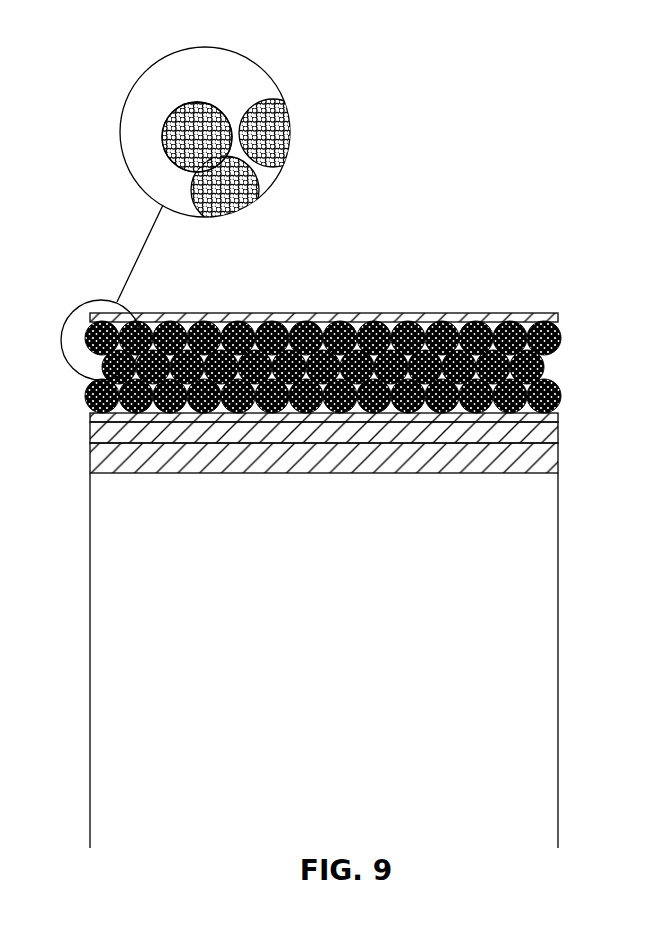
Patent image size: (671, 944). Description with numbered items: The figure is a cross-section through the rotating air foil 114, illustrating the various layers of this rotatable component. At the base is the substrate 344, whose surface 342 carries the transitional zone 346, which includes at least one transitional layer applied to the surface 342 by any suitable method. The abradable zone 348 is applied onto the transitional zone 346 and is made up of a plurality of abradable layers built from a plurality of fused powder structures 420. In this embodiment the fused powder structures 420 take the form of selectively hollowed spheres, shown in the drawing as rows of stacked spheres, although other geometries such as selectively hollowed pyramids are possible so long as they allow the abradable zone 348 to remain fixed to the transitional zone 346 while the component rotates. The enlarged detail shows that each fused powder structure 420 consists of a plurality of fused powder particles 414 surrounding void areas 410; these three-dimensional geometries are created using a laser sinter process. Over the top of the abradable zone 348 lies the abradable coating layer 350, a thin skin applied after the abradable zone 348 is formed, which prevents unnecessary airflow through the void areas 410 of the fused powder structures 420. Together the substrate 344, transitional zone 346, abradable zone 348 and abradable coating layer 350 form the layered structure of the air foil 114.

The air foil 114 is at (358, 671).
The surface 342 is at (362, 473).
The substrate 344 is at (527, 713).
The transitional zone 346 is at (369, 600).
The abradable zone 348 is at (562, 322).
The abradable coating layer 350 is at (488, 312).
The void areas 410 is at (162, 137).
The fused powder particles 414 is at (190, 102).
The fused powder structures 420 is at (84, 337).